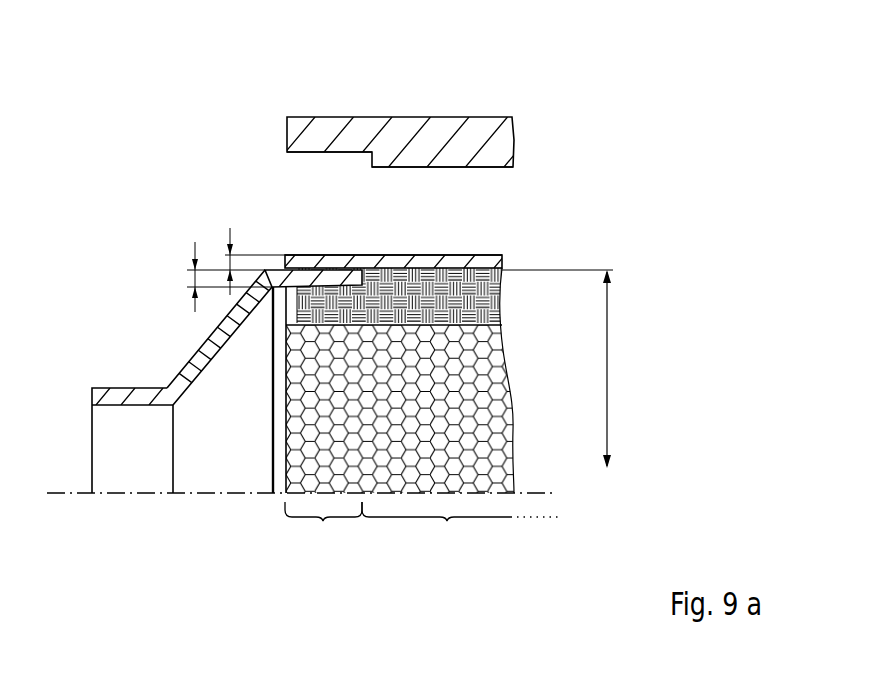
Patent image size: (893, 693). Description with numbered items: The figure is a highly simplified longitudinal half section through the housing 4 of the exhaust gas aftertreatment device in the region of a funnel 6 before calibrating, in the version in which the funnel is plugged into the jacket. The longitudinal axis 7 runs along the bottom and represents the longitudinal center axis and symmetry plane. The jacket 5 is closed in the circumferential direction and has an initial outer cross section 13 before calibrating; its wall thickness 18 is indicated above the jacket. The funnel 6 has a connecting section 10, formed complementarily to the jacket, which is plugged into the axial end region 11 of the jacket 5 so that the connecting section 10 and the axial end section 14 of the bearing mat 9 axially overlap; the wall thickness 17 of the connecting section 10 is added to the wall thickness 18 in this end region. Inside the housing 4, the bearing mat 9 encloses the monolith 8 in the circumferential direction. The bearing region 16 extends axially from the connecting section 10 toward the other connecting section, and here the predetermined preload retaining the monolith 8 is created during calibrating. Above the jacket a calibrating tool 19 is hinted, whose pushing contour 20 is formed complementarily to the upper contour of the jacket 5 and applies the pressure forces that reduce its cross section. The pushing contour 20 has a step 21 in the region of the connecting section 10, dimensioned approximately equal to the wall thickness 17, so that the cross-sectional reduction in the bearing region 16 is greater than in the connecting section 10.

The housing 4 is at (198, 336).
The jacket 5 is at (489, 250).
The funnel 6 is at (124, 381).
The longitudinal axis 7 is at (221, 495).
The monolith 8 is at (497, 412).
The bearing mat 9 is at (505, 302).
The connecting section 10 is at (311, 278).
The axial end region 11 is at (333, 262).
The initial outer cross section 13 is at (608, 367).
The axial end section 14 is at (323, 521).
The bearing region 16 is at (447, 521).
The wall thickness of the connecting section 17 is at (195, 277).
The wall thickness of the jacket 18 is at (230, 256).
The calibrating tool 19 is at (496, 115).
The pushing contour 20 is at (423, 169).
The step 21 is at (330, 152).